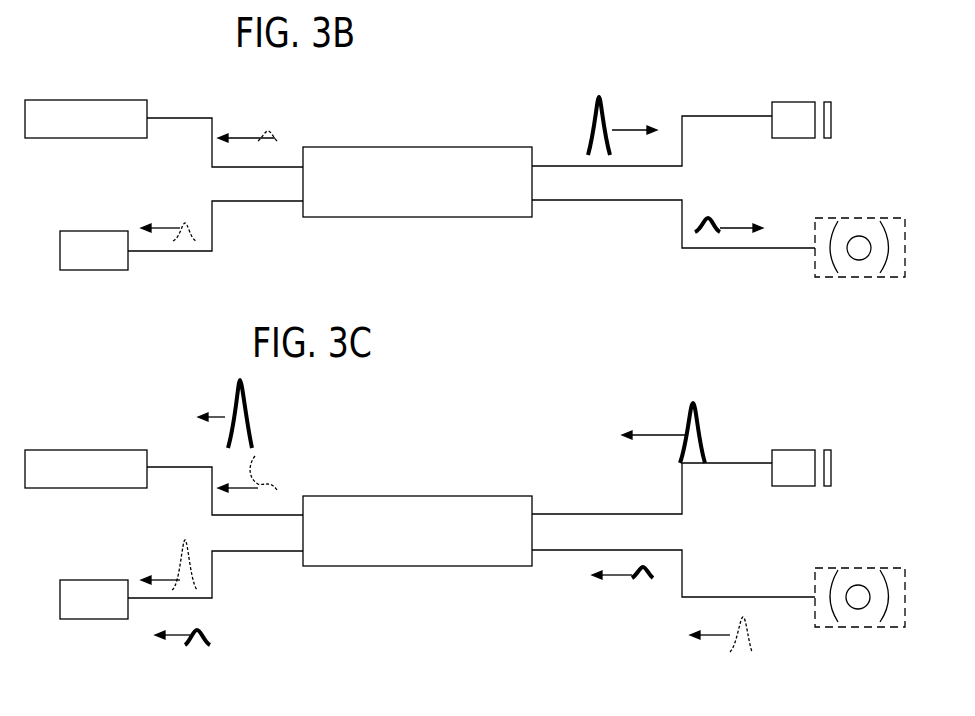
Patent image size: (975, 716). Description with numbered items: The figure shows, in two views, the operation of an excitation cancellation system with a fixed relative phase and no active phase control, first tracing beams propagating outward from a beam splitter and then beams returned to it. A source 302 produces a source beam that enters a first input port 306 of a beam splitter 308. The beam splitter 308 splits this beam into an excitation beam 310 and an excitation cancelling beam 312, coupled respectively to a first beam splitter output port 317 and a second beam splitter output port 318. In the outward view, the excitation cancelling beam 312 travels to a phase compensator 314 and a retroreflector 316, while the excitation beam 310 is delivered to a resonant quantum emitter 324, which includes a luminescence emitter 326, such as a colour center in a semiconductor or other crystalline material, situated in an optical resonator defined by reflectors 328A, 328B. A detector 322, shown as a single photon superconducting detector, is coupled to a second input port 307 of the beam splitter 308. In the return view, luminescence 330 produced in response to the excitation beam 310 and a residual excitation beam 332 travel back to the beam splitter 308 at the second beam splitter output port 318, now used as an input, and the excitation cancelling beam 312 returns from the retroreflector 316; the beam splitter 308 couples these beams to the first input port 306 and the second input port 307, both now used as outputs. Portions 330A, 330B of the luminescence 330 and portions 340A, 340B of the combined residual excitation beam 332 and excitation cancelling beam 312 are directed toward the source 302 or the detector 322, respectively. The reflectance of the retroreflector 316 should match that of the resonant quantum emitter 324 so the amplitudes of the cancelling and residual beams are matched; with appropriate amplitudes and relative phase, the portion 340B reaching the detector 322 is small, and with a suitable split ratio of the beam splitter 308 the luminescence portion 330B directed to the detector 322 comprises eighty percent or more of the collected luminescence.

In FIG. 3B, the source 302 is at (66, 100).
In FIG. 3C, the source 302 is at (66, 450).
In FIG. 3B, the first input port 306 is at (293, 165).
In FIG. 3C, the first input port 306 is at (290, 513).
In FIG. 3B, the second input port 307 is at (273, 203).
In FIG. 3C, the second input port 307 is at (280, 552).
In FIG. 3B, the beam splitter 308 is at (407, 147).
In FIG. 3C, the beam splitter 308 is at (407, 496).
In FIG. 3B, the excitation beam 310 is at (710, 224).
In FIG. 3B, the excitation cancelling beam 312 is at (593, 112).
In FIG. 3C, the excitation cancelling beam 312 is at (692, 405).
In FIG. 3B, the phase compensator 314 is at (798, 102).
In FIG. 3C, the phase compensator 314 is at (798, 450).
In FIG. 3B, the retroreflector 316 is at (832, 100).
In FIG. 3C, the retroreflector 316 is at (832, 449).
In FIG. 3B, the first beam splitter output port 317 is at (592, 201).
In FIG. 3C, the first beam splitter output port 317 is at (592, 551).
In FIG. 3B, the second beam splitter output port 318 is at (542, 160).
In FIG. 3C, the second beam splitter output port 318 is at (568, 513).
In FIG. 3B, the detector 322 is at (90, 231).
In FIG. 3C, the detector 322 is at (90, 580).
In FIG. 3B, the resonant quantum emitter 324 is at (855, 207).
In FIG. 3C, the resonant quantum emitter 324 is at (855, 555).
In FIG. 3B, the luminescence emitter 326 is at (856, 261).
In FIG. 3C, the luminescence emitter 326 is at (856, 610).
In FIG. 3B, the reflector 328A is at (827, 257).
In FIG. 3C, the reflector 328A is at (827, 607).
In FIG. 3B, the reflector 328B is at (888, 267).
In FIG. 3C, the reflector 328B is at (888, 617).
In FIG. 3C, the luminescence 330 is at (728, 648).
In FIG. 3C, the luminescence portion 330A is at (283, 468).
In FIG. 3C, the luminescence portion 330B is at (208, 560).
In FIG. 3C, the residual excitation beam 332 is at (652, 577).
In FIG. 3C, the combined beam portion 340A is at (255, 410).
In FIG. 3C, the combined beam portion 340B is at (208, 636).